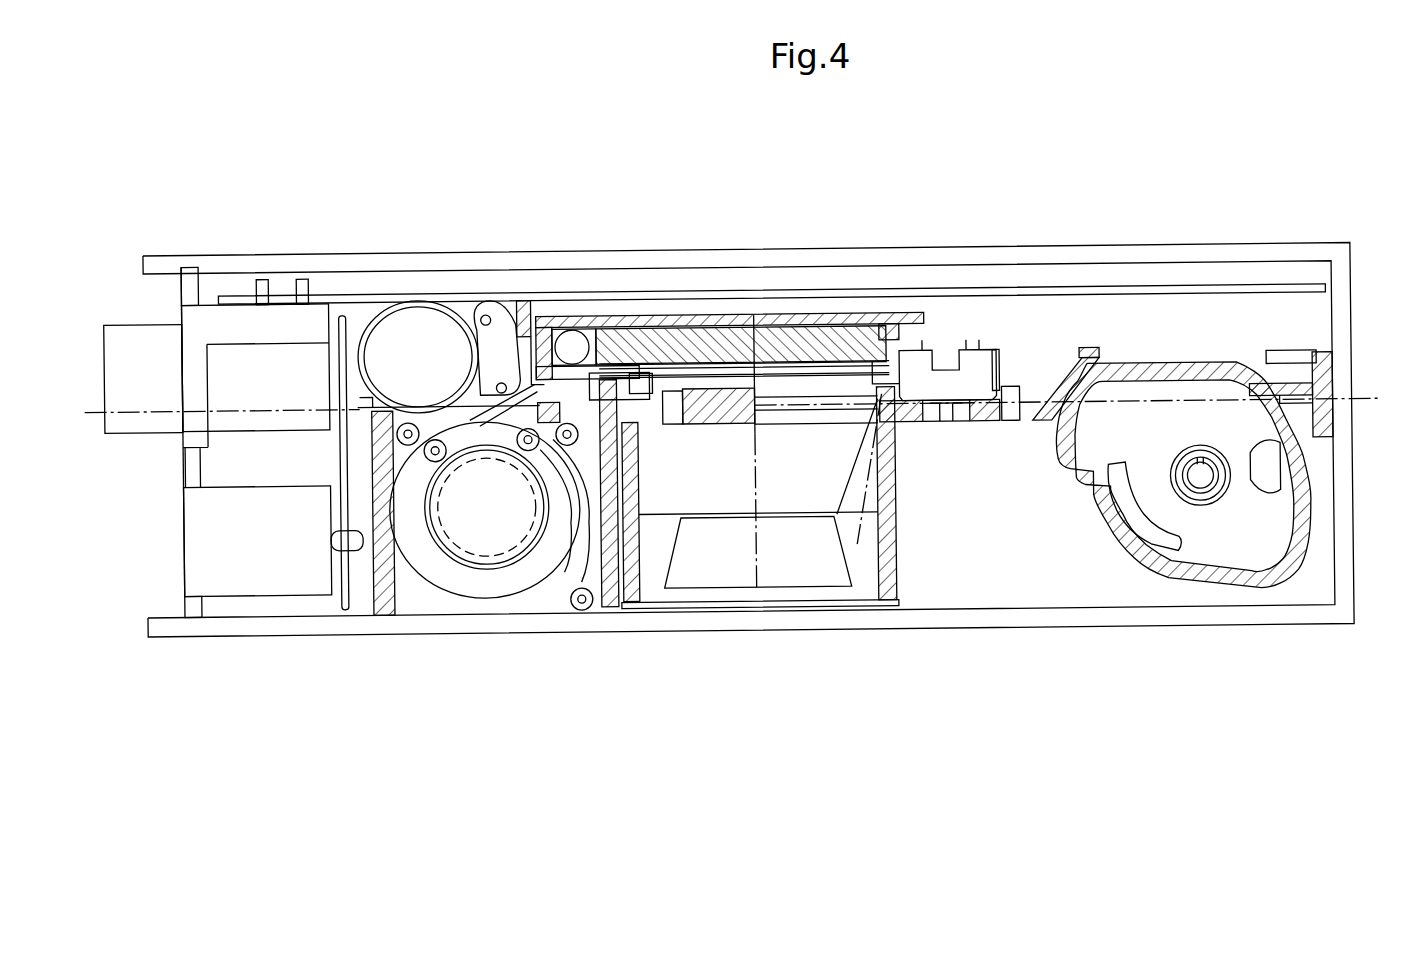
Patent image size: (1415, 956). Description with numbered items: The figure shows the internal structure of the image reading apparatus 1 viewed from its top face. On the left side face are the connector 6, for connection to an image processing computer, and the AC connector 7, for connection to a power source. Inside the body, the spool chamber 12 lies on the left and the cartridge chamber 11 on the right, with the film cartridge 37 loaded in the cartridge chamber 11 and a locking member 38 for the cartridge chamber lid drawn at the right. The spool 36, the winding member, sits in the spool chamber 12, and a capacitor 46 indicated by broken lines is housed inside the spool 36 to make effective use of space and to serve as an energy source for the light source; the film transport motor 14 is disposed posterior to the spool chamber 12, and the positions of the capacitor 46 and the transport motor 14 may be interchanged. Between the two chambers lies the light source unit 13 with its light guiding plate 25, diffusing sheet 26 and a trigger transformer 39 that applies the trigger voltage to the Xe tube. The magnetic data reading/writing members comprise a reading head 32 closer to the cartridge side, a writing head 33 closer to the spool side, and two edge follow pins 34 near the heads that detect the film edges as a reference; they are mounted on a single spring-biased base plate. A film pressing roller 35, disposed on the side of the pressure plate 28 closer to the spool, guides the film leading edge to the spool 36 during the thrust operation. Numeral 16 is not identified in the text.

The image reading apparatus 1 is at (315, 657).
The connector 6 is at (142, 342).
The AC connector 7 is at (172, 563).
The cartridge chamber 11 is at (1223, 602).
The spool chamber 12 is at (472, 596).
The light source unit 13 is at (788, 322).
The film transport motor 14 is at (385, 348).
The ink tank 16 is at (897, 549).
The light guiding plate 25 is at (867, 342).
The diffusing sheet 26 is at (820, 365).
The pressure plate 28 is at (1093, 358).
The reading head 32 is at (978, 380).
The writing head 33 is at (620, 393).
The edge follow pins 34 is at (672, 427).
The film pressing roller 35 is at (500, 322).
The spool 36 is at (507, 571).
The film cartridge 37 is at (1278, 537).
The locking member 38 is at (1330, 374).
The trigger transformer 39 is at (575, 335).
The capacitor 46 is at (470, 540).